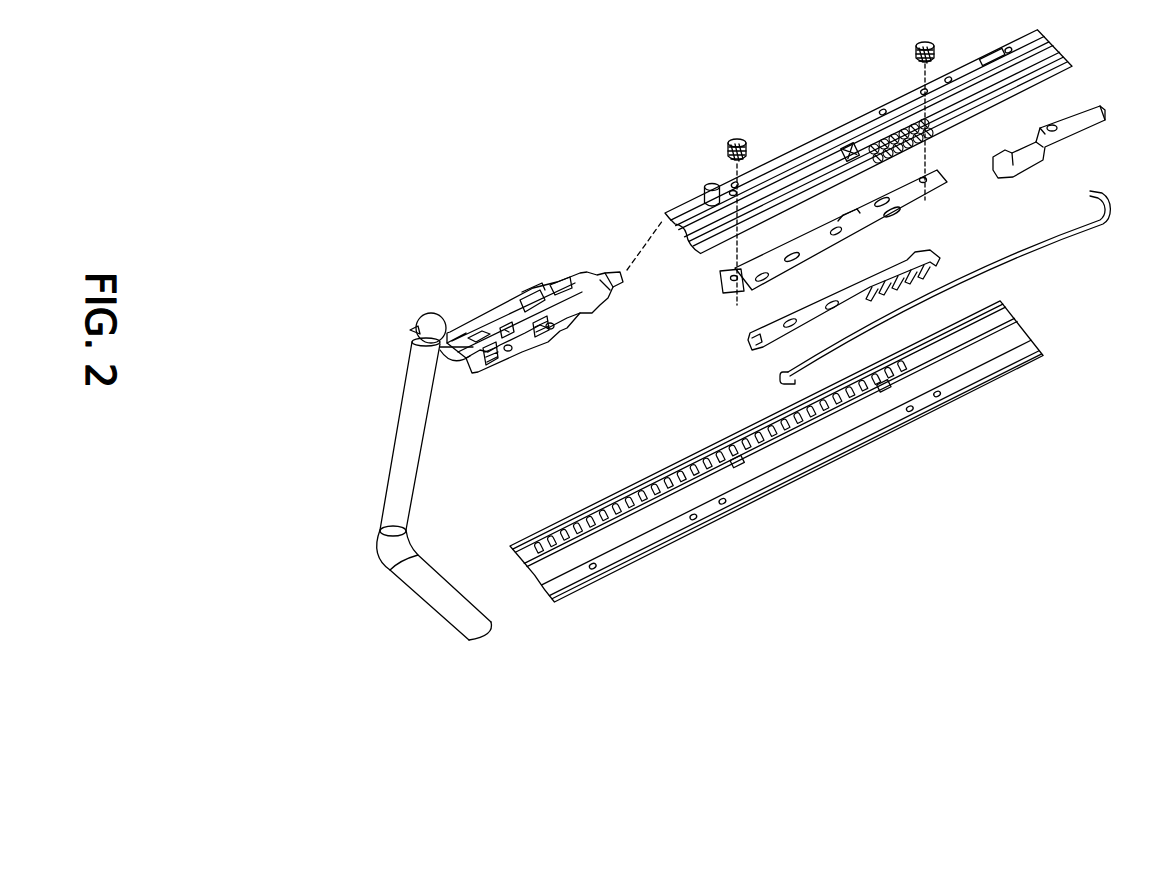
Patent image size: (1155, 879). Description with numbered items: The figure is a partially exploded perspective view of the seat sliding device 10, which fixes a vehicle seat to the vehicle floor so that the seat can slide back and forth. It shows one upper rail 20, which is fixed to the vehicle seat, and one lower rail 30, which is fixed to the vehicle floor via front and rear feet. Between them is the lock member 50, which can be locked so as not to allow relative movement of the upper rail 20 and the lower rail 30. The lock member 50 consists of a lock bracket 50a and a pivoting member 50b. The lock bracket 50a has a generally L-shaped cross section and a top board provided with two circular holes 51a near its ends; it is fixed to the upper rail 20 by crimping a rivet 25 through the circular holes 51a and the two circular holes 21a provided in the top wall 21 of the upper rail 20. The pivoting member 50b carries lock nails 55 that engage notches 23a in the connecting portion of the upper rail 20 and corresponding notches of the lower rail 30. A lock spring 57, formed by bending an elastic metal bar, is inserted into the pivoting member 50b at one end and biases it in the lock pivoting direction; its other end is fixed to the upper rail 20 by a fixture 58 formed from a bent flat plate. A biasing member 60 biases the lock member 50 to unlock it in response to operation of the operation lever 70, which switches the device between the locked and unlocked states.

The seat sliding device 10 is at (400, 146).
The upper rail 20 is at (796, 93).
The top wall 21 is at (822, 136).
The circular hole 21a is at (728, 192).
The notch 23a is at (930, 140).
The rivet 25 is at (739, 138).
The lower rail 30 is at (835, 501).
The lock member 50 is at (656, 328).
The lock bracket 50a is at (727, 292).
The pivoting member 50b is at (748, 341).
The circular hole 51a is at (723, 279).
The lock nail 55 is at (940, 260).
The lock spring 57 is at (1062, 248).
The fixture 58 is at (1082, 134).
The biasing member 60 is at (499, 289).
The operation lever 70 is at (361, 437).